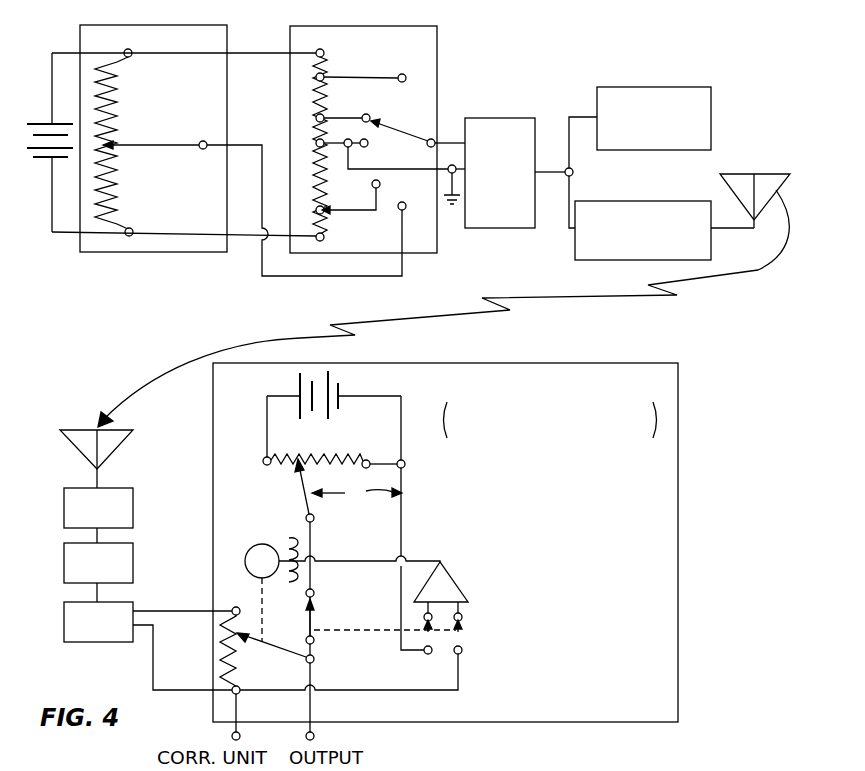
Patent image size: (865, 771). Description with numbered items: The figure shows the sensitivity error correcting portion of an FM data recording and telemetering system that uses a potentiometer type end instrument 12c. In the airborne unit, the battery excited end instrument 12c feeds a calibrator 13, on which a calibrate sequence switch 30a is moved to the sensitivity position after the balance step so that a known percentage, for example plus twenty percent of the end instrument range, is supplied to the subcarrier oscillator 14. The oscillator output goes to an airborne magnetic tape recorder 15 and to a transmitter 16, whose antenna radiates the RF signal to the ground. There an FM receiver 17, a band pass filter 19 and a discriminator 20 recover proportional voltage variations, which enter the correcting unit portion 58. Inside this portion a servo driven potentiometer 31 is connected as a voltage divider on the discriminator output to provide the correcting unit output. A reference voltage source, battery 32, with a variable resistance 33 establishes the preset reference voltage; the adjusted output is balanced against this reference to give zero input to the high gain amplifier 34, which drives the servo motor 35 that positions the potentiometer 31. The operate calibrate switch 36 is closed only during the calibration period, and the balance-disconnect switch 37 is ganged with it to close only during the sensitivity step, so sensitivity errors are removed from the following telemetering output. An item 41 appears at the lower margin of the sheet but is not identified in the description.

The potentiometer type end instrument 12c is at (80, 43).
The calibrator 13 is at (440, 49).
The calibrate sequence switch 30a is at (406, 128).
The subcarrier oscillator 14 is at (490, 118).
The airborne magnetic tape recorder 15 is at (641, 87).
The transmitter 16 is at (661, 201).
The FM receiver 17 is at (64, 510).
The band pass filter 19 is at (64, 568).
The discriminator 20 is at (64, 623).
The correcting unit portion 58 is at (473, 363).
The battery 32 is at (333, 378).
The variable resistance 33 is at (303, 483).
The servo motor 35 is at (245, 561).
The high gain amplifier 34 is at (456, 591).
The operate calibrate switch 36 is at (461, 648).
The balance-disconnect switch 37 is at (313, 629).
The servo driven potentiometer 31 is at (264, 648).
The lead 41 is at (505, 767).